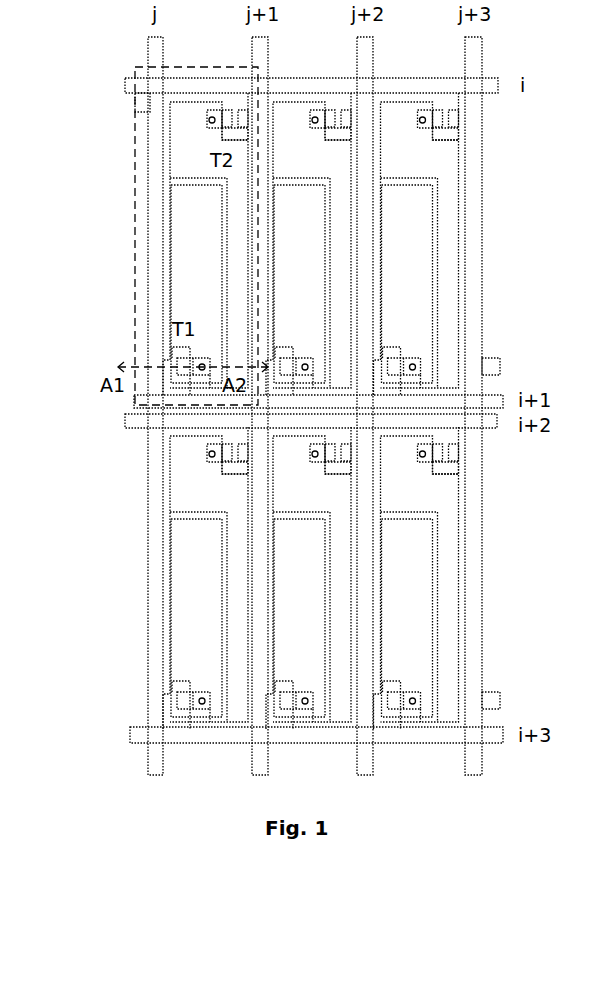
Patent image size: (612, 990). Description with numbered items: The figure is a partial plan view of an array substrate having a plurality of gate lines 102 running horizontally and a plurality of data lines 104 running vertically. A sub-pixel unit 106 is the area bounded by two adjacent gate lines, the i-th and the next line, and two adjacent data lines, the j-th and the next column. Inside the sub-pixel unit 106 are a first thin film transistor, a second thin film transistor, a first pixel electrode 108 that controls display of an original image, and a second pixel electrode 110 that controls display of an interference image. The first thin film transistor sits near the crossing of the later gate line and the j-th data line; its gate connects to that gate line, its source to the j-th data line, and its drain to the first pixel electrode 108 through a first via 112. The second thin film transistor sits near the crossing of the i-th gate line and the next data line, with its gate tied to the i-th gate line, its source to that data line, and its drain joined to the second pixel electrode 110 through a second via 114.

The gate lines 102 is at (135, 95).
The data lines 104 is at (148, 50).
The sub-pixel unit 106 is at (136, 134).
The first pixel electrode 108 is at (190, 259).
The second pixel electrode 110 is at (186, 176).
The first via 112 is at (200, 364).
The second via 114 is at (209, 122).